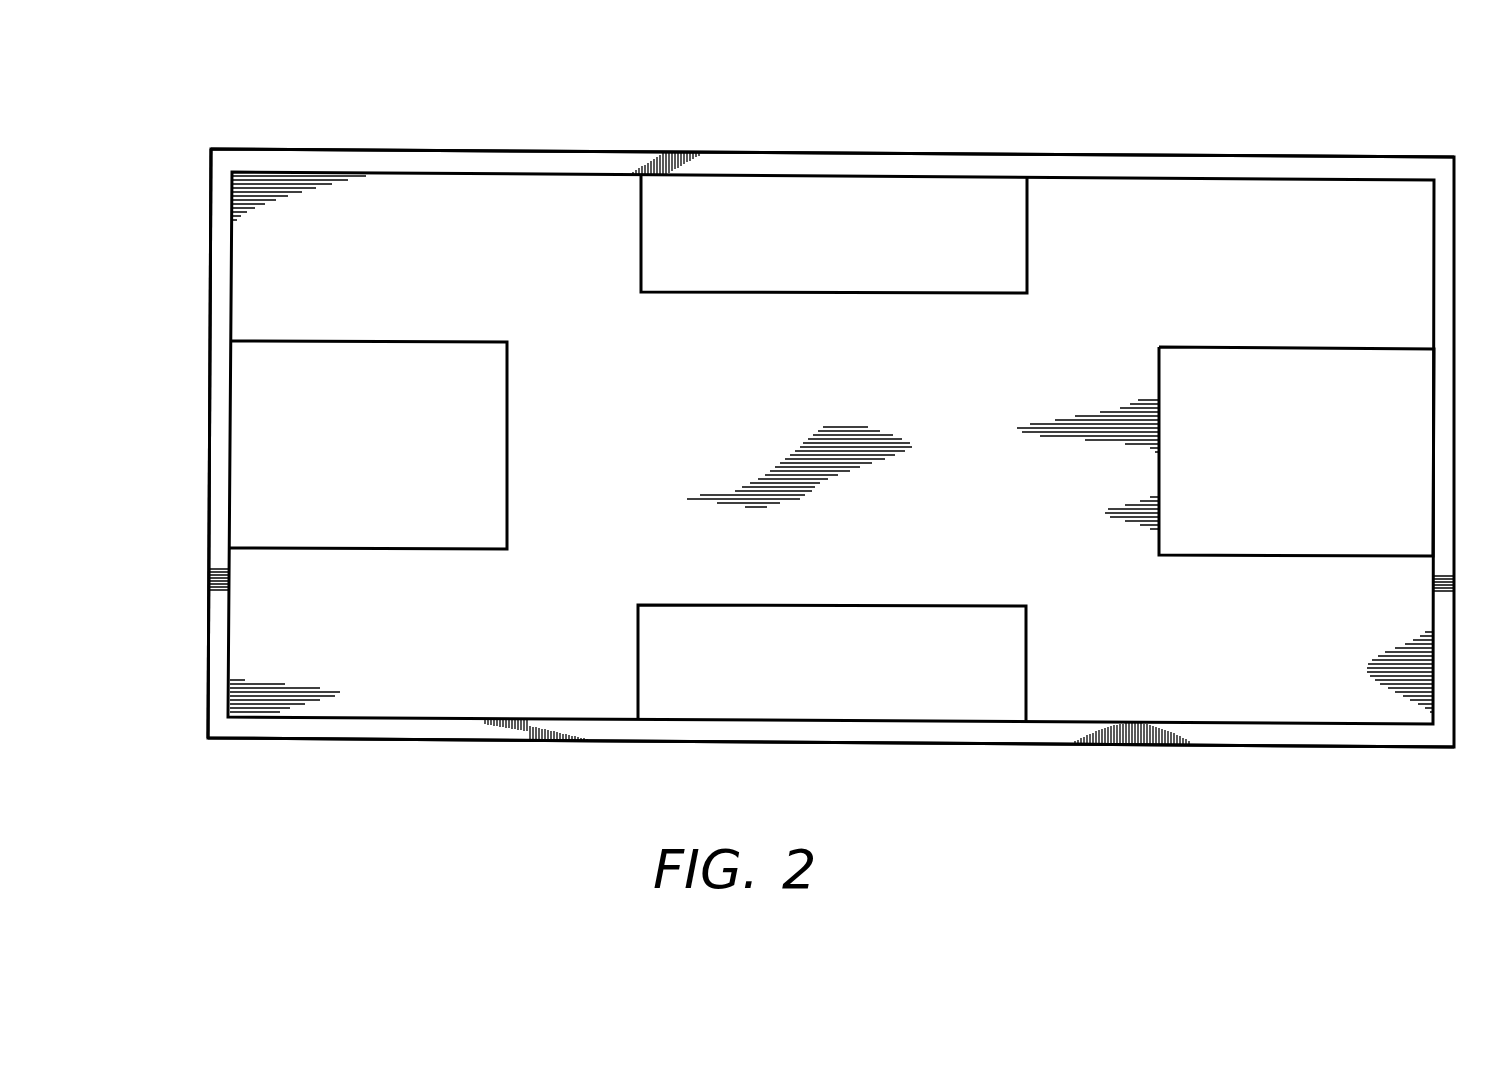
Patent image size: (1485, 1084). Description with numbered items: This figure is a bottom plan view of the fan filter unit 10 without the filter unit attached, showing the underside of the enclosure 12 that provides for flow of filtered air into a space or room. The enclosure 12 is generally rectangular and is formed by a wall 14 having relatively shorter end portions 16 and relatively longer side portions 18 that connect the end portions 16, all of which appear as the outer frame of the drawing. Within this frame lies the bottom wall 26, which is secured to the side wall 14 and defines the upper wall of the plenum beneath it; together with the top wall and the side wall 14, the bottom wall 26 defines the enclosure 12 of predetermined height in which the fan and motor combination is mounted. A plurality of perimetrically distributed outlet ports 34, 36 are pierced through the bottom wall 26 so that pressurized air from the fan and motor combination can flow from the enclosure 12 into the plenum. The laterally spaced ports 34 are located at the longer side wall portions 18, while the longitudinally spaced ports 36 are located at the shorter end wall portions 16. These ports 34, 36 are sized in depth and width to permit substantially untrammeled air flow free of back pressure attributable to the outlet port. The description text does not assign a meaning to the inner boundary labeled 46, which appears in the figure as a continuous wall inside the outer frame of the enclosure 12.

The fan filter unit 10 is at (472, 111).
The enclosure 12 is at (588, 152).
The wall 14 is at (457, 743).
The end portions 16 is at (210, 268).
The side portions 18 is at (1036, 150).
The bottom wall 26 is at (521, 636).
The outlet ports 34 is at (398, 360).
The outlet ports 36 is at (811, 208).
The inner wall 46 is at (1248, 177).